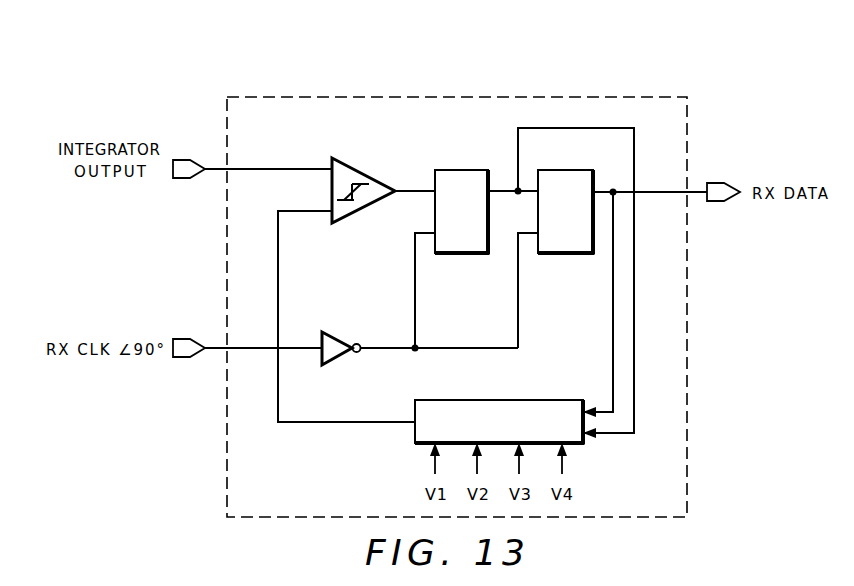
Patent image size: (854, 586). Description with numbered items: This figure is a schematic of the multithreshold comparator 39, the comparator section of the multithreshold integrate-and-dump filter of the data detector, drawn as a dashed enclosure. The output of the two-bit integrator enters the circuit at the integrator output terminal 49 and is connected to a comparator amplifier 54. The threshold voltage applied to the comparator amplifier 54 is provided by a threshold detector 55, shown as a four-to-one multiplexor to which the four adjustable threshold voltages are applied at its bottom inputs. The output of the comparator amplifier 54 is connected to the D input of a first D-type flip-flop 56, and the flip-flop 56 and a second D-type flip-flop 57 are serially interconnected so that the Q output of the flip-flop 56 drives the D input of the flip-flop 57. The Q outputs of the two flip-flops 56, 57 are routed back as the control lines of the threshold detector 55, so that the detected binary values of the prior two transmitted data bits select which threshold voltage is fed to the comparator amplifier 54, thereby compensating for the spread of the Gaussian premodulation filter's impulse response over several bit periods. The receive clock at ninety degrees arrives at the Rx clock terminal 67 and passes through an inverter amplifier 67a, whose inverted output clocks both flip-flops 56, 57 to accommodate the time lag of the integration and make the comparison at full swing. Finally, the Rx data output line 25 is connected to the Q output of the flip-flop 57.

The Rx data output line 25 is at (717, 184).
The multithreshold comparator 39 is at (636, 97).
The integrator output input terminal 49 is at (184, 160).
The comparator amplifier 54 is at (370, 207).
The threshold detector 55 is at (415, 436).
The D-type flip-flop 56 is at (462, 255).
The D-type flip-flop 57 is at (570, 255).
The RX CLK 90 degree input terminal 67 is at (184, 339).
The inverter amplifier 67a is at (341, 336).